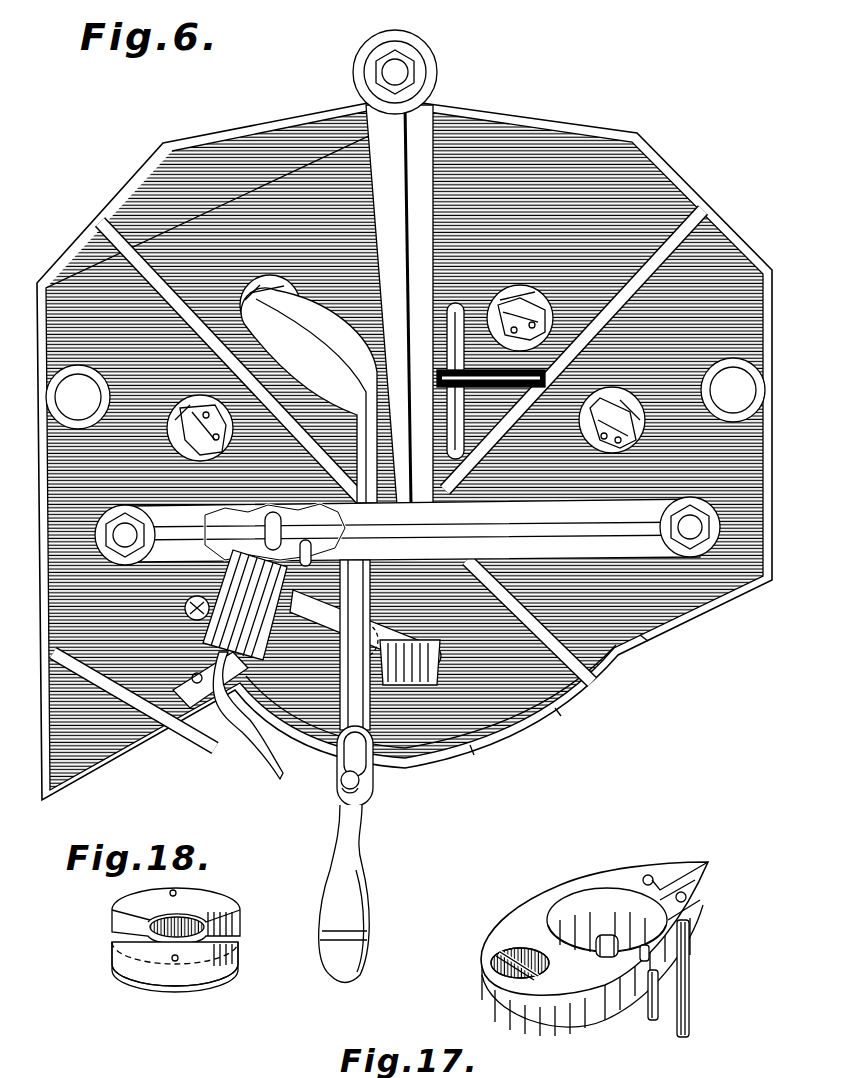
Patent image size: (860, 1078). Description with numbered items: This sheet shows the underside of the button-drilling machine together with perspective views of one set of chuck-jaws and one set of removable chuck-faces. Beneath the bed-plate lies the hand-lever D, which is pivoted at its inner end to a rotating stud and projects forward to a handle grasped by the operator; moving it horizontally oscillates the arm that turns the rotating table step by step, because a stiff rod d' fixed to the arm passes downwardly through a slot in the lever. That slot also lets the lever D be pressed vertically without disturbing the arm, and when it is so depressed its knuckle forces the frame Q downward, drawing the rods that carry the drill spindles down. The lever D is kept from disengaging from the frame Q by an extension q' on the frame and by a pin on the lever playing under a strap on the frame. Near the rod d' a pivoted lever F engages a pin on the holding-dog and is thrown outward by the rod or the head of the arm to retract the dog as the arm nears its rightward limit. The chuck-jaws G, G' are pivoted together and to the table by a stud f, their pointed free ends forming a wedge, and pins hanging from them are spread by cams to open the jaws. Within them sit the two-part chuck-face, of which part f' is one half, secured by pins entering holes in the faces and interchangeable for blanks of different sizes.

In FIG. 6, the frame Q is at (407, 297).
In FIG. 6, the extension q' is at (309, 394).
In FIG. 6, the pivoted lever F is at (266, 762).
In FIG. 6, the hand-lever D is at (366, 903).
In FIG. 6, the rod d' is at (331, 770).
In FIG. 18, the chuck-face part f' is at (157, 916).
In FIG. 17, the chuck-jaw G is at (594, 936).
In FIG. 17, the chuck-jaw G' is at (703, 885).
In FIG. 17, the stud f is at (498, 966).